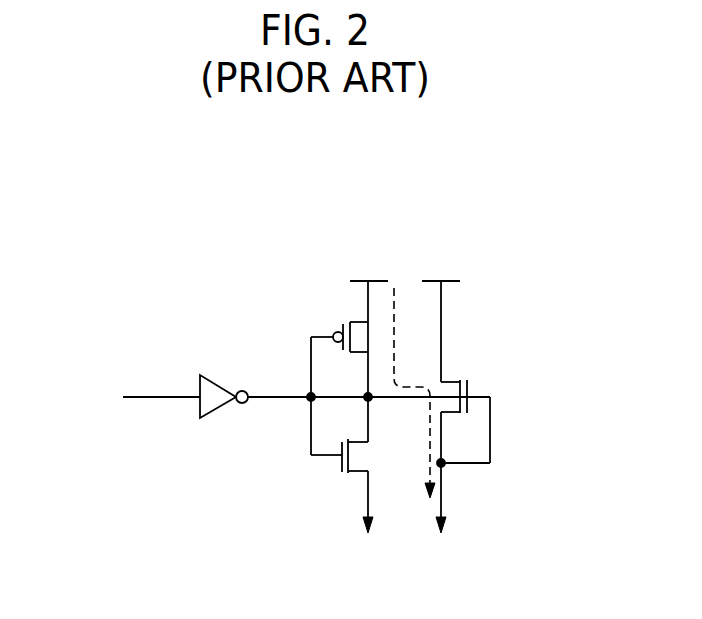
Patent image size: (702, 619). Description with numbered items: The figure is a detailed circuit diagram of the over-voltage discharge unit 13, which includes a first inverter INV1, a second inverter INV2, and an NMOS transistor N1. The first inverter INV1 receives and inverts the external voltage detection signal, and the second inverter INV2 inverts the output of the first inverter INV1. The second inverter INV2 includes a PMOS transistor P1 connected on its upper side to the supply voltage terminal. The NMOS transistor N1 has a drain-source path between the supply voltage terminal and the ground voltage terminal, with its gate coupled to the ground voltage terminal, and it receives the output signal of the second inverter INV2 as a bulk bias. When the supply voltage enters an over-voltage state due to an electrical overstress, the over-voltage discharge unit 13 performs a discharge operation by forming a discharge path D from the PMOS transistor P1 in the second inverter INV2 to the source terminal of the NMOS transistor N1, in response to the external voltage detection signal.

The over-voltage discharge unit 13 is at (94, 203).
The first inverter INV1 is at (229, 406).
The second inverter INV2 is at (312, 467).
The PMOS transistor P1 is at (339, 353).
The NMOS transistor N1 is at (456, 408).
The discharge path D is at (414, 393).